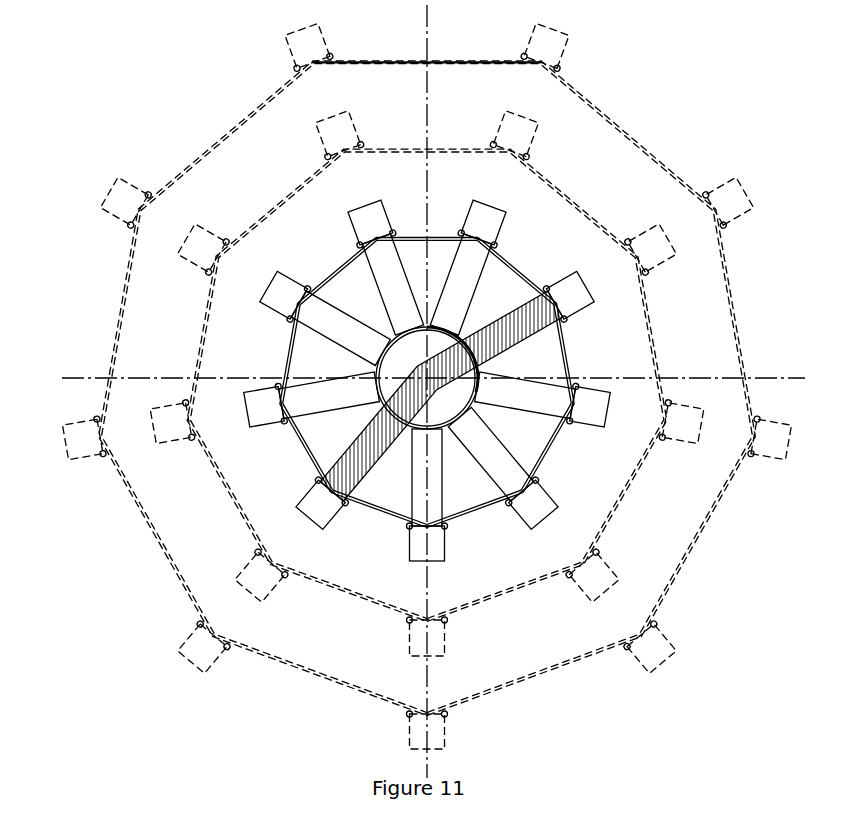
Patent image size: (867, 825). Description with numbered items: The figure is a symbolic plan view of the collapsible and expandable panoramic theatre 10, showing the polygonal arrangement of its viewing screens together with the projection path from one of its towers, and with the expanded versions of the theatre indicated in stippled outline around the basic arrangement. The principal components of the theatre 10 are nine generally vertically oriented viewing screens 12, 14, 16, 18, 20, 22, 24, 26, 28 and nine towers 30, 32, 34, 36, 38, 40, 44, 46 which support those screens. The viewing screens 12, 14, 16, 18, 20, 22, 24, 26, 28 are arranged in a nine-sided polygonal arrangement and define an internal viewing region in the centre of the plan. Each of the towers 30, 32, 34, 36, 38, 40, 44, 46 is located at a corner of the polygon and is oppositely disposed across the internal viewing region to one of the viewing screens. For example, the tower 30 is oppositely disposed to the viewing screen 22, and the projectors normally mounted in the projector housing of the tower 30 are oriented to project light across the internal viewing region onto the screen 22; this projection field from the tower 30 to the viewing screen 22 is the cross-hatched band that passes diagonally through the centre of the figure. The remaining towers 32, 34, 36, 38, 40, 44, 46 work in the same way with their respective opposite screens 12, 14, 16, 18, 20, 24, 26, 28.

The panoramic theatre 10 is at (545, 215).
The viewing screen 12 is at (372, 515).
The viewing screen 14 is at (305, 457).
The viewing screen 16 is at (288, 357).
The viewing screen 18 is at (334, 263).
The viewing screen 20 is at (427, 236).
The viewing screen 22 is at (523, 267).
The viewing screen 24 is at (575, 344).
The viewing screen 26 is at (557, 452).
The viewing screen 28 is at (472, 517).
The tower 30 is at (308, 525).
The tower 32 is at (247, 417).
The tower 34 is at (267, 285).
The tower 36 is at (360, 203).
The tower 38 is at (490, 205).
The tower 40 is at (590, 287).
The tower 44 is at (542, 520).
The tower 46 is at (421, 562).